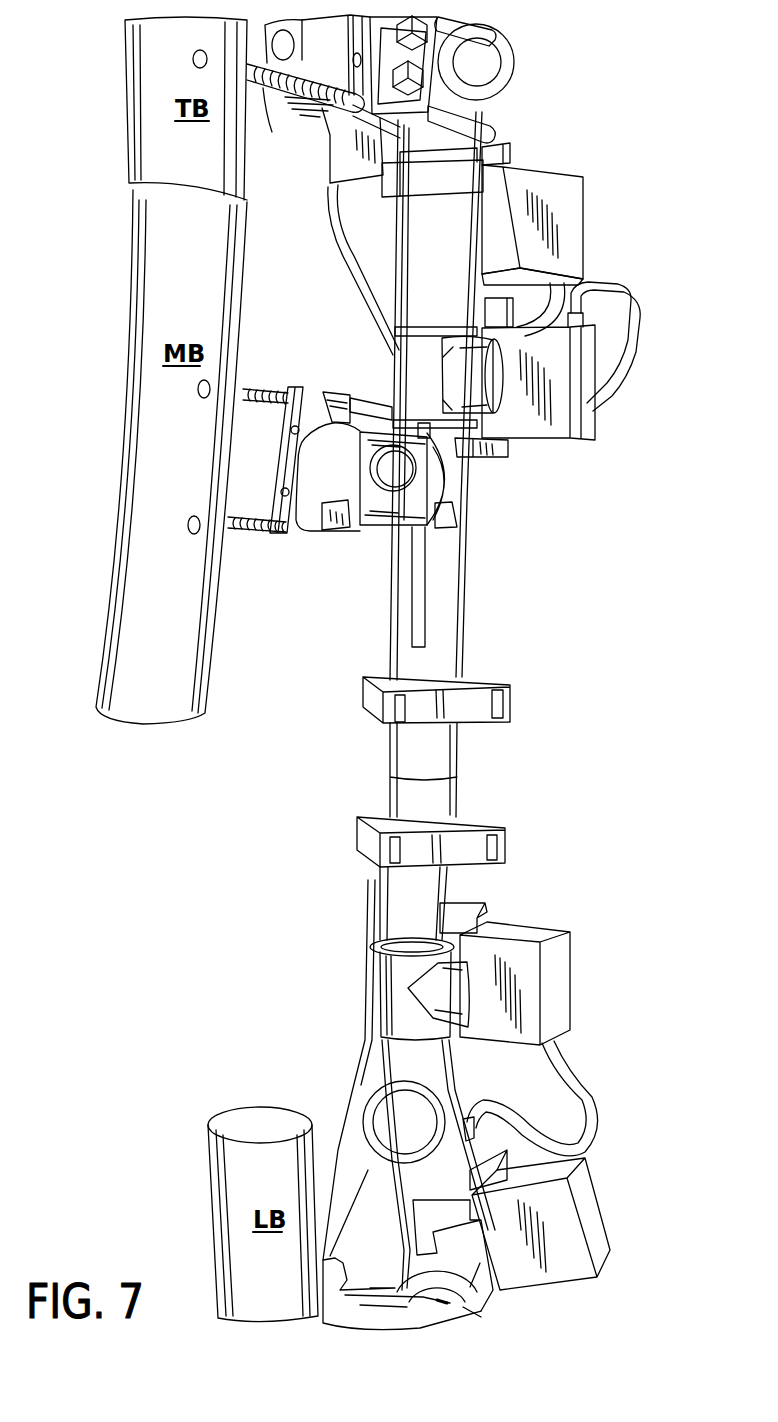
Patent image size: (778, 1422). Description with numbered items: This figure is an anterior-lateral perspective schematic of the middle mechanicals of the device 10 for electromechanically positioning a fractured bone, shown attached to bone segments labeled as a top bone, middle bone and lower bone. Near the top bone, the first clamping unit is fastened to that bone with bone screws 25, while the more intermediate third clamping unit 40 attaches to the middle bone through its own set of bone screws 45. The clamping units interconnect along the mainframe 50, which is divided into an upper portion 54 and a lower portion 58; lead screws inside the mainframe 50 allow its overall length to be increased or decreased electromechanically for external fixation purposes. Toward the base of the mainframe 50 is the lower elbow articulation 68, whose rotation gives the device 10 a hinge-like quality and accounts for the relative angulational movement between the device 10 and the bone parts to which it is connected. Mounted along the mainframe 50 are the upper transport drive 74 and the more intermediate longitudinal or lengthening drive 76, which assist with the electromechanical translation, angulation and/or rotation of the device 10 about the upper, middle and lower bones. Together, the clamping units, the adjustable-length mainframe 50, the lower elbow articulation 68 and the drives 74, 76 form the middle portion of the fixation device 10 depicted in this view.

The device 10 is at (592, 454).
The bone screws 25 is at (272, 132).
The third clamping unit 40 is at (323, 473).
The bone screws 45 is at (269, 387).
The mainframe 50 is at (368, 742).
The upper portion 54 is at (468, 607).
The lower portion 58 is at (350, 1100).
The lower elbow articulation 68 is at (467, 1272).
The upper transport drive 74 is at (567, 215).
The lengthening drive 76 is at (570, 973).